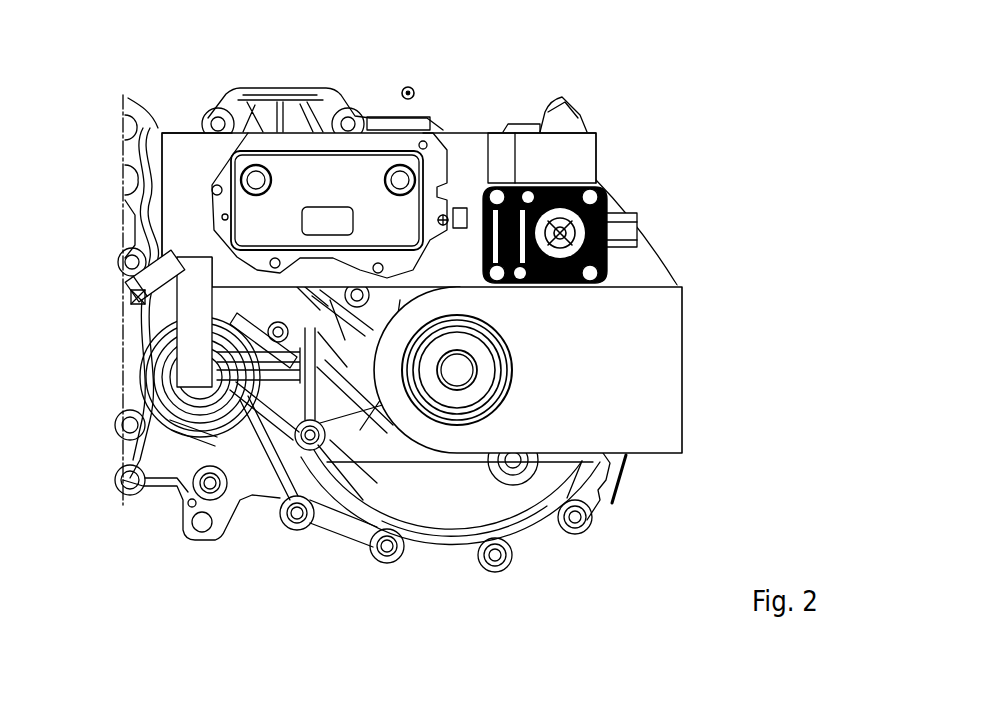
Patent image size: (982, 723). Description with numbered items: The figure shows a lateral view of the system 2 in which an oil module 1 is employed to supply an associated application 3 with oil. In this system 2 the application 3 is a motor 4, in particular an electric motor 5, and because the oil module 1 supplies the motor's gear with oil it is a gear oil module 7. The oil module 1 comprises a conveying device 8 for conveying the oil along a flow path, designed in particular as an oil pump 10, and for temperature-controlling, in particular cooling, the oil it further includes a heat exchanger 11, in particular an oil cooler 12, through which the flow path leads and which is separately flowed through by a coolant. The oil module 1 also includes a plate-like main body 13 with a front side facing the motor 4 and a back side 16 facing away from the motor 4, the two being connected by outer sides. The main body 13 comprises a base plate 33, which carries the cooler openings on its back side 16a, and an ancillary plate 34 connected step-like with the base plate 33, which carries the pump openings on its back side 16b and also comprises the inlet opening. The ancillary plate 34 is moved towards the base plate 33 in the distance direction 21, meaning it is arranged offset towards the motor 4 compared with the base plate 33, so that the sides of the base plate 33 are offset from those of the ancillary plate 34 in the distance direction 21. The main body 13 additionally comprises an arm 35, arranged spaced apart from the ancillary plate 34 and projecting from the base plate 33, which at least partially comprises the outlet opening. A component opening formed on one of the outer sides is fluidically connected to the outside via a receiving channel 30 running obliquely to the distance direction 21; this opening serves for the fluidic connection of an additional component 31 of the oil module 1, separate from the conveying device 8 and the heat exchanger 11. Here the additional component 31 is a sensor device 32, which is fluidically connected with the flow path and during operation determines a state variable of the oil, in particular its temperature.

The oil module 1 is at (622, 110).
The system 2 is at (738, 137).
The application 3 is at (417, 330).
The motor 4 is at (417, 330).
The electric motor 5 is at (617, 513).
The gear oil module 7 is at (374, 299).
The conveying device 8 is at (602, 235).
The oil pump 10 is at (640, 232).
The heat exchanger 11 is at (339, 205).
The oil cooler 12 is at (357, 195).
The main body 13 is at (608, 156).
The back side 16 is at (379, 159).
The back side of the base plate 16a is at (183, 148).
The back side of the ancillary plate 16b is at (534, 147).
The distance direction 21 is at (408, 87).
The receiving channel 30 is at (133, 272).
The additional component 31 is at (86, 311).
The sensor device 32 is at (133, 298).
The base plate 33 is at (201, 180).
The ancillary plate 34 is at (564, 180).
The arm 35 is at (207, 311).